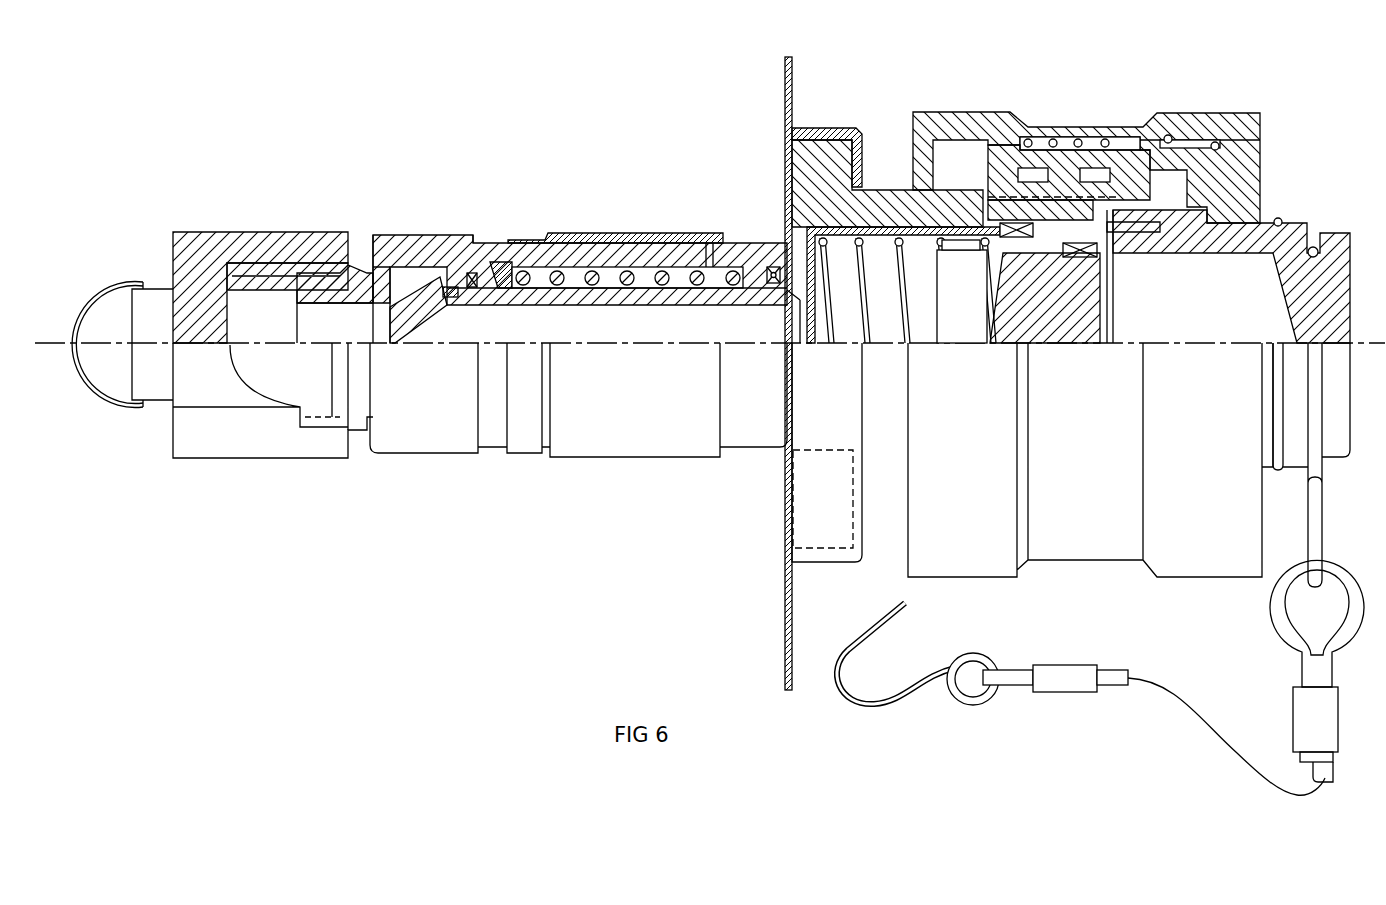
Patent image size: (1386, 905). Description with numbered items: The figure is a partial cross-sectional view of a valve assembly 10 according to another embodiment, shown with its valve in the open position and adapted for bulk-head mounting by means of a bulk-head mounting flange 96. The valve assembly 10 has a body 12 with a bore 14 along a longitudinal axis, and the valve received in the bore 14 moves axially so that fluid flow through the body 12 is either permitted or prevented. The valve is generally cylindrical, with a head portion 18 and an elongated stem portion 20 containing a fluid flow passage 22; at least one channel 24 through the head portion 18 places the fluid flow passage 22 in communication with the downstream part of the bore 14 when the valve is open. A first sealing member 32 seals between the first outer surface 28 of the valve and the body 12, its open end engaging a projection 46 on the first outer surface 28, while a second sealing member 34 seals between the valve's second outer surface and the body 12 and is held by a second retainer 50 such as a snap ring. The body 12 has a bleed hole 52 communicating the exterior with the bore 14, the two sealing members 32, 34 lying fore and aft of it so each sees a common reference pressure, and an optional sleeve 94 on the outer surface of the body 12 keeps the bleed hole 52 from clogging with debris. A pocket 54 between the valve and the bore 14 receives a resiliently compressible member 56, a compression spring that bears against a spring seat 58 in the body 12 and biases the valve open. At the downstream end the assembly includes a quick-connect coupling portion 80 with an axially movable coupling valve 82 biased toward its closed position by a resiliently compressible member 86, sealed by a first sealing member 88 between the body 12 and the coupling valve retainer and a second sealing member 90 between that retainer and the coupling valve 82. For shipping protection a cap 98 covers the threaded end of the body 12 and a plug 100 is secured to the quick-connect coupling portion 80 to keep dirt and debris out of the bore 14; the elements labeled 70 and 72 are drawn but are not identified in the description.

The valve assembly 10 is at (1172, 66).
The body 12 is at (428, 218).
The bore 14 is at (907, 290).
The head portion 18 is at (388, 262).
The stem portion 20 is at (655, 306).
The fluid flow passage 22 is at (578, 384).
The channel 24 is at (425, 305).
The first outer surface 28 is at (784, 235).
The first sealing member 32 is at (772, 265).
The second sealing member 34 is at (468, 276).
The projection 46 is at (797, 288).
The second retainer 50 is at (418, 248).
The bleed hole 52 is at (598, 268).
The pocket 54 is at (647, 272).
The resiliently compressible member 56 is at (695, 244).
The spring seat 58 is at (492, 262).
The actuating shaft 70 is at (292, 265).
The knob 72 is at (193, 297).
The quick-connect coupling portion 80 is at (847, 800).
The coupling valve 82 is at (955, 253).
The resiliently compressible member 86 is at (900, 228).
The first sealing member 88 is at (1070, 190).
The second sealing member 90 is at (1075, 257).
The sleeve 94 is at (565, 232).
The bulk-head mounting flange 96 is at (795, 105).
The cap 98 is at (277, 231).
The plug 100 is at (1313, 248).